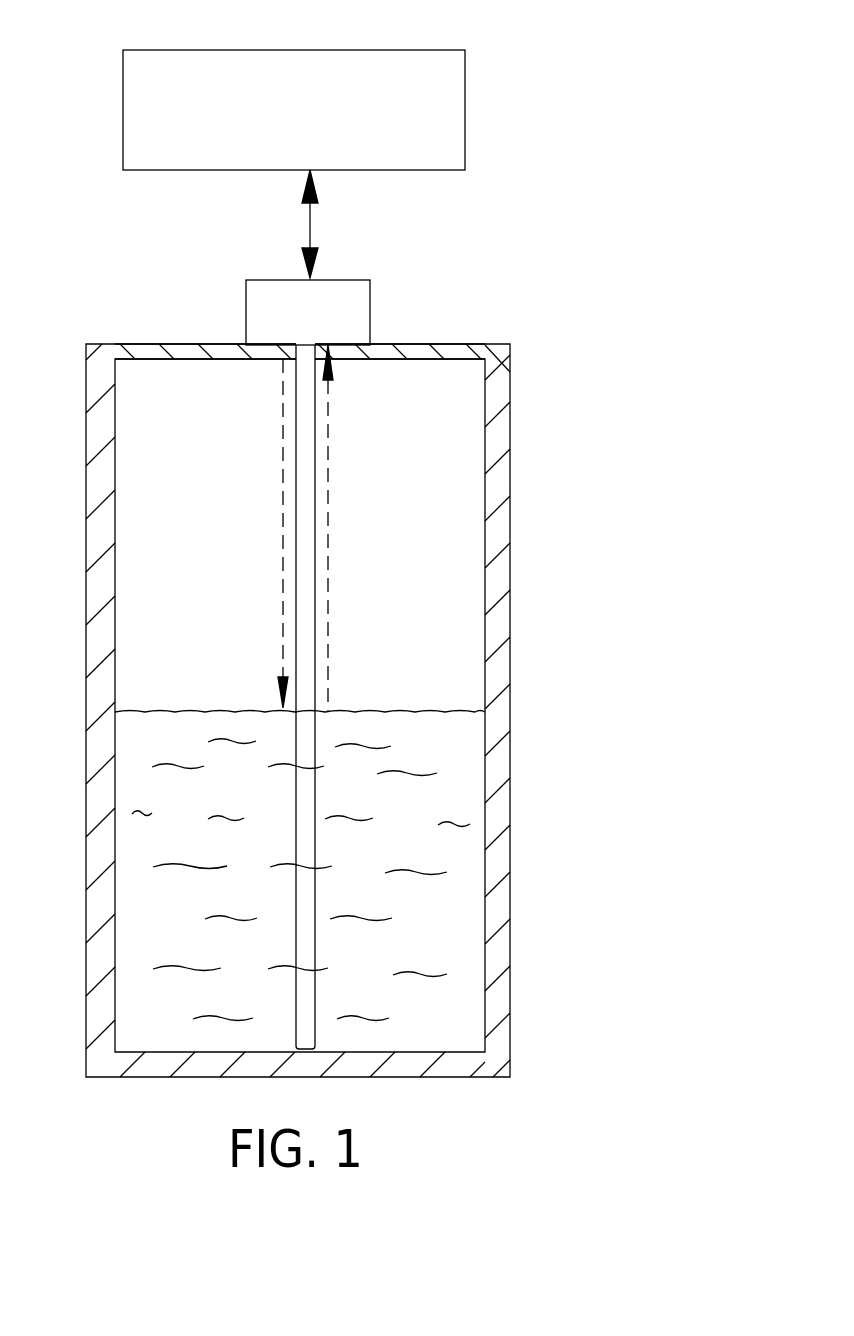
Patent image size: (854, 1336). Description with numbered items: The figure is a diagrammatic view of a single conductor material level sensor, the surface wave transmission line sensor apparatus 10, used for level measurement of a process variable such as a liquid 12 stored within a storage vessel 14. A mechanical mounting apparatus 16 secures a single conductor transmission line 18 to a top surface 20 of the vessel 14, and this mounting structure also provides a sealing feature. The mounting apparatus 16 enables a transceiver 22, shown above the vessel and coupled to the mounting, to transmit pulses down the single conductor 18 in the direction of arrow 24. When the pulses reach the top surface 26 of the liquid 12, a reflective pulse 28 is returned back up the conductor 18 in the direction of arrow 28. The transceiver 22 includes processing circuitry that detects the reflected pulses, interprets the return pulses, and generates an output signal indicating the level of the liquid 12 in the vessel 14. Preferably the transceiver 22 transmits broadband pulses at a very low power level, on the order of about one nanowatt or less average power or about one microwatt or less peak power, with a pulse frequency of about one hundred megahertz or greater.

The apparatus 10 is at (332, 257).
The liquid 12 is at (140, 911).
The storage vessel 14 is at (102, 600).
The mechanical mounting apparatus 16 is at (264, 282).
The single conductor transmission line 18 is at (317, 535).
The top surface of the vessel 20 is at (425, 358).
The transceiver 22 is at (443, 147).
The arrow 24 is at (283, 475).
The top surface of liquid 26 is at (354, 712).
The reflective pulse 28 is at (330, 490).